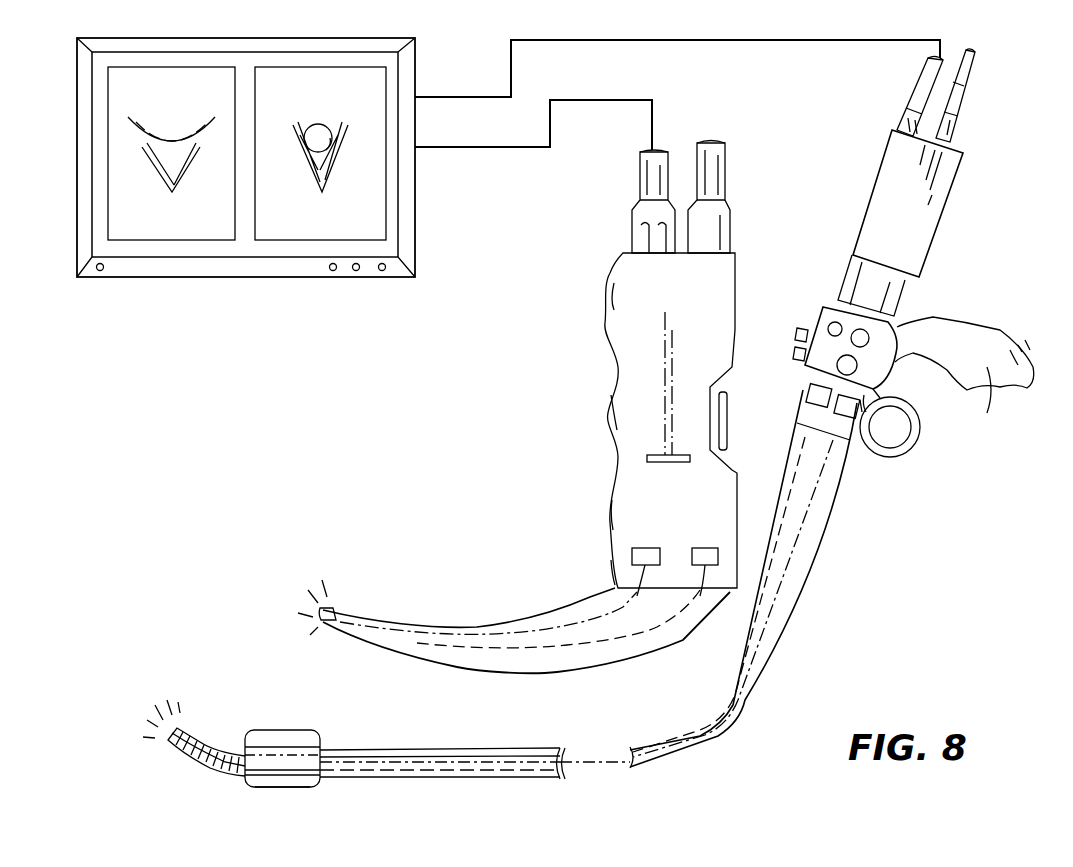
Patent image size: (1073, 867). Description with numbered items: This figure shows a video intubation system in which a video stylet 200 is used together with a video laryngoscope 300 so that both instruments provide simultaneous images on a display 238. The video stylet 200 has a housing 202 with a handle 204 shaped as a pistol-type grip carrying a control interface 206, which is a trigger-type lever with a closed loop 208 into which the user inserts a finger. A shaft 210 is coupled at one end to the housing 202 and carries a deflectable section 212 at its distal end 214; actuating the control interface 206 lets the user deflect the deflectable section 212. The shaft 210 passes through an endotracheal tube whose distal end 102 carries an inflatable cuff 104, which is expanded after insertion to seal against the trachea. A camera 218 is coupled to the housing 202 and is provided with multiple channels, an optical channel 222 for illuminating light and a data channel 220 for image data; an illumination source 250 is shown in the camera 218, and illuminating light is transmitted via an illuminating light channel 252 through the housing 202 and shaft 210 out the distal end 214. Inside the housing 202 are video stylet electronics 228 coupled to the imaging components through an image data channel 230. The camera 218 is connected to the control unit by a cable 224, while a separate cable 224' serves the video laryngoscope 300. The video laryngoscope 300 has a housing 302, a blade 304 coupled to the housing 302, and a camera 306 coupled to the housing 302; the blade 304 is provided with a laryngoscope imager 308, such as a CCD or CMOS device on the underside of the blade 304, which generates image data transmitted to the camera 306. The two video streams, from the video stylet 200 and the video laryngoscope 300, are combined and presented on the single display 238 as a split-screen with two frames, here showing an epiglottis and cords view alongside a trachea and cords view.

The display 238 is at (235, 38).
The cable 224 is at (677, 52).
The cable 224' is at (533, 150).
The data channel 220 is at (923, 85).
The optical channel 222 is at (960, 102).
The camera 218 is at (920, 247).
The video stylet 200 is at (1030, 330).
The housing 302 is at (612, 372).
The camera 306 is at (717, 380).
The illumination source 250 is at (808, 392).
The illuminating light channel 252 is at (790, 470).
The handle 204 is at (993, 387).
The closed loop 208 is at (920, 440).
The video stylet electronics 228 is at (857, 447).
The control interface 206 is at (898, 466).
The video laryngoscope 300 is at (537, 503).
The image data channel 230 is at (810, 557).
The housing 202 is at (790, 600).
The laryngoscope imager 308 is at (338, 608).
The blade 304 is at (510, 617).
The distal end 214 is at (186, 716).
The distal end 102 is at (287, 748).
The deflectable section 212 is at (213, 763).
The inflatable cuff 104 is at (315, 782).
The shaft 210 is at (427, 782).